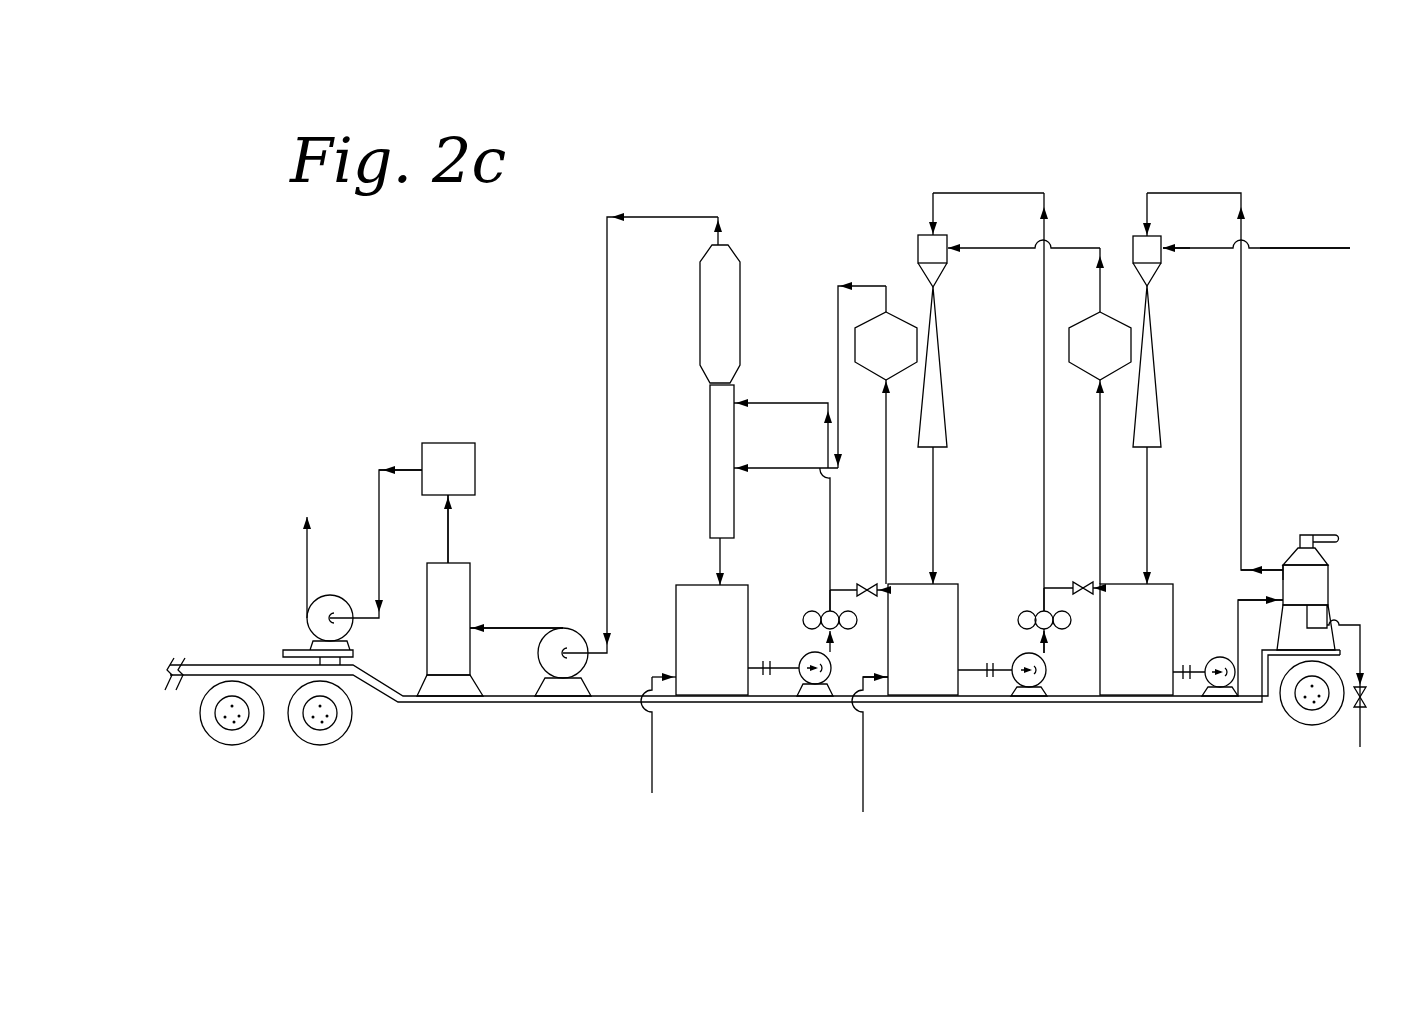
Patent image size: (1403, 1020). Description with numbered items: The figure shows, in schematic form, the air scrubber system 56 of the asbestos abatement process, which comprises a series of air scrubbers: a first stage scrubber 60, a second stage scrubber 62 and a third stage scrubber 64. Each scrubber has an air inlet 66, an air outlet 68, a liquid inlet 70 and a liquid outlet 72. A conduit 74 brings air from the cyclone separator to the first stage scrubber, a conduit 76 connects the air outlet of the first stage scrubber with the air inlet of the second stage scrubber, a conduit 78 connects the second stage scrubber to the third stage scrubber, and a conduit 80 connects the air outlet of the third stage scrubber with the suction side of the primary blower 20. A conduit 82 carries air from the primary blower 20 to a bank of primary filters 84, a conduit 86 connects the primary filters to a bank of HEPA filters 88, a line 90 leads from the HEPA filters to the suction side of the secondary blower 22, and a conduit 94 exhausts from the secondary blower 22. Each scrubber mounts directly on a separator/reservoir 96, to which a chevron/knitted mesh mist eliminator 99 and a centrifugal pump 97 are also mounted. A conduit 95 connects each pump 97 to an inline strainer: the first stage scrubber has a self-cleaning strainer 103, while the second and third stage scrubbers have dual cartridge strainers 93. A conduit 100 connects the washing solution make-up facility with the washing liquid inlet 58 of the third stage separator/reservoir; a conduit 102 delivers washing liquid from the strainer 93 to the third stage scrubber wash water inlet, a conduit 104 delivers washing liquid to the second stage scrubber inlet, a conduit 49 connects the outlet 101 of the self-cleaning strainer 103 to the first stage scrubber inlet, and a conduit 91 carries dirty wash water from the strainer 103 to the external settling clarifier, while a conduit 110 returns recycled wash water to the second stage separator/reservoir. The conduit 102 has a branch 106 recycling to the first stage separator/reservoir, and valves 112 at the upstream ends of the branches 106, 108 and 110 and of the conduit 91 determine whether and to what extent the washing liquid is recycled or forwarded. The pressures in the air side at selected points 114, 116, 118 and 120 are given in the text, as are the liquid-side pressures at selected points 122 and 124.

The air scrubber system 56 is at (777, 96).
The conduit 104 is at (984, 192).
The conduit 49 is at (1229, 191).
The conduit 76 is at (1072, 246).
The liquid inlet 70 is at (929, 229).
The air inlet 66 is at (953, 246).
The second stage scrubber 62 is at (913, 251).
The first stage scrubber 60 is at (1167, 265).
The liquid outlet 72 is at (938, 472).
The chevron/knitted mesh mist eliminator 99 is at (698, 300).
The air outlet 68 is at (727, 240).
The third stage scrubber 64 is at (706, 420).
The conduit 102 is at (790, 400).
The conduit 78 is at (838, 283).
The branch 106 is at (839, 585).
The conduit 80 is at (604, 316).
The line 90 is at (376, 480).
The selected point 120 is at (399, 465).
The conduit 94 is at (304, 548).
The conduit 86 is at (453, 521).
The selected point 118 is at (453, 544).
The bank of HEPA filters 88 is at (449, 441).
The bank of primary filters 84 is at (425, 595).
The selected point 116 is at (498, 626).
The conduit 82 is at (538, 625).
The primary blower 20 is at (574, 627).
The secondary blower 22 is at (335, 594).
The separator/reservoir 96 is at (672, 599).
The washing liquid inlet 58 is at (674, 659).
The conduit 100 is at (652, 768).
The conduit 110 is at (863, 768).
The centrifugal pump 97 is at (801, 654).
The dual cartridge strainer 93 is at (814, 608).
The outlet 101 is at (828, 606).
The conduit 95 is at (838, 656).
The selected point 122 is at (1041, 643).
The valve 112 is at (866, 582).
The branch 108 is at (1052, 579).
The selected point 124 is at (1236, 626).
The self-cleaning strainer 103 is at (1326, 554).
The conduit 91 is at (1358, 731).
The conduit 74 is at (1269, 247).
The selected point 114 is at (1296, 246).